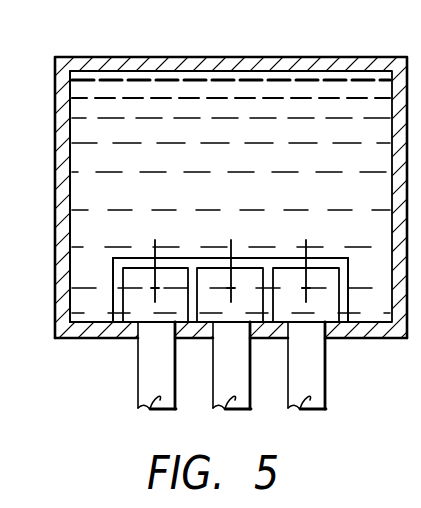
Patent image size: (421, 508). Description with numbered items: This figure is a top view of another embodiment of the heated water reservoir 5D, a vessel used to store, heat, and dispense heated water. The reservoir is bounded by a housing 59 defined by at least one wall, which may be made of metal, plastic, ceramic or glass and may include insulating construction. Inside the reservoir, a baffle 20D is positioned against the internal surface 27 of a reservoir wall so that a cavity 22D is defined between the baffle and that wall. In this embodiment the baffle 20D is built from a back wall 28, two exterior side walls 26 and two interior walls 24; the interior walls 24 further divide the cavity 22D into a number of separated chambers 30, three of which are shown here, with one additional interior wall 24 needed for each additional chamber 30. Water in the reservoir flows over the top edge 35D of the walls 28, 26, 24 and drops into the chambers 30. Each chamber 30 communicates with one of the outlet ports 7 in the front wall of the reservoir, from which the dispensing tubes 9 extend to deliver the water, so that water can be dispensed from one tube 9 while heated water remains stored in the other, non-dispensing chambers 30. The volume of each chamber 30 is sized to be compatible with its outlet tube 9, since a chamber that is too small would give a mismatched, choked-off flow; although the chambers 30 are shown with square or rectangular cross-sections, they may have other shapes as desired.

The heated water reservoir 5D is at (47, 82).
The housing 59 is at (52, 172).
The top edge 35D is at (113, 266).
The baffle 20D is at (132, 262).
The interior walls 24 is at (257, 274).
The back wall 28 is at (240, 258).
The chambers 30 is at (249, 298).
The exterior side walls 26 is at (113, 283).
The internal surface 27 is at (83, 320).
The cavity 22D is at (345, 302).
The outlet ports 7 is at (176, 341).
The dispensing tubes 9 is at (148, 408).